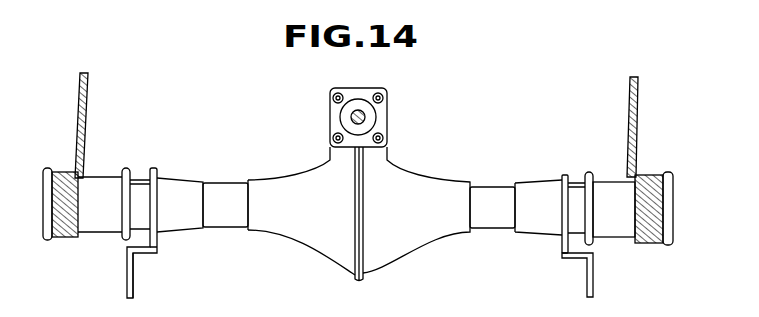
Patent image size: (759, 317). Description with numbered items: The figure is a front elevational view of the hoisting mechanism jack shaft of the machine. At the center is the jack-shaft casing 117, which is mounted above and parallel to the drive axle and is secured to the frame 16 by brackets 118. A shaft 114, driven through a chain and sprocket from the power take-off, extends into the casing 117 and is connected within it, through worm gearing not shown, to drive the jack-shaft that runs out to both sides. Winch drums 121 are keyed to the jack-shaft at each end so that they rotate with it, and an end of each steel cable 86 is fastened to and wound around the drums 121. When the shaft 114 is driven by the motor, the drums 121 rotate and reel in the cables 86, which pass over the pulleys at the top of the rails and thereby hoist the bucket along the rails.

The steel cable 86 is at (88, 107).
The winch drum 121 is at (113, 223).
The frame 16 is at (126, 280).
The jack-shaft casing 117 is at (377, 173).
The shaft 114 is at (366, 118).
The bracket 118 is at (562, 175).